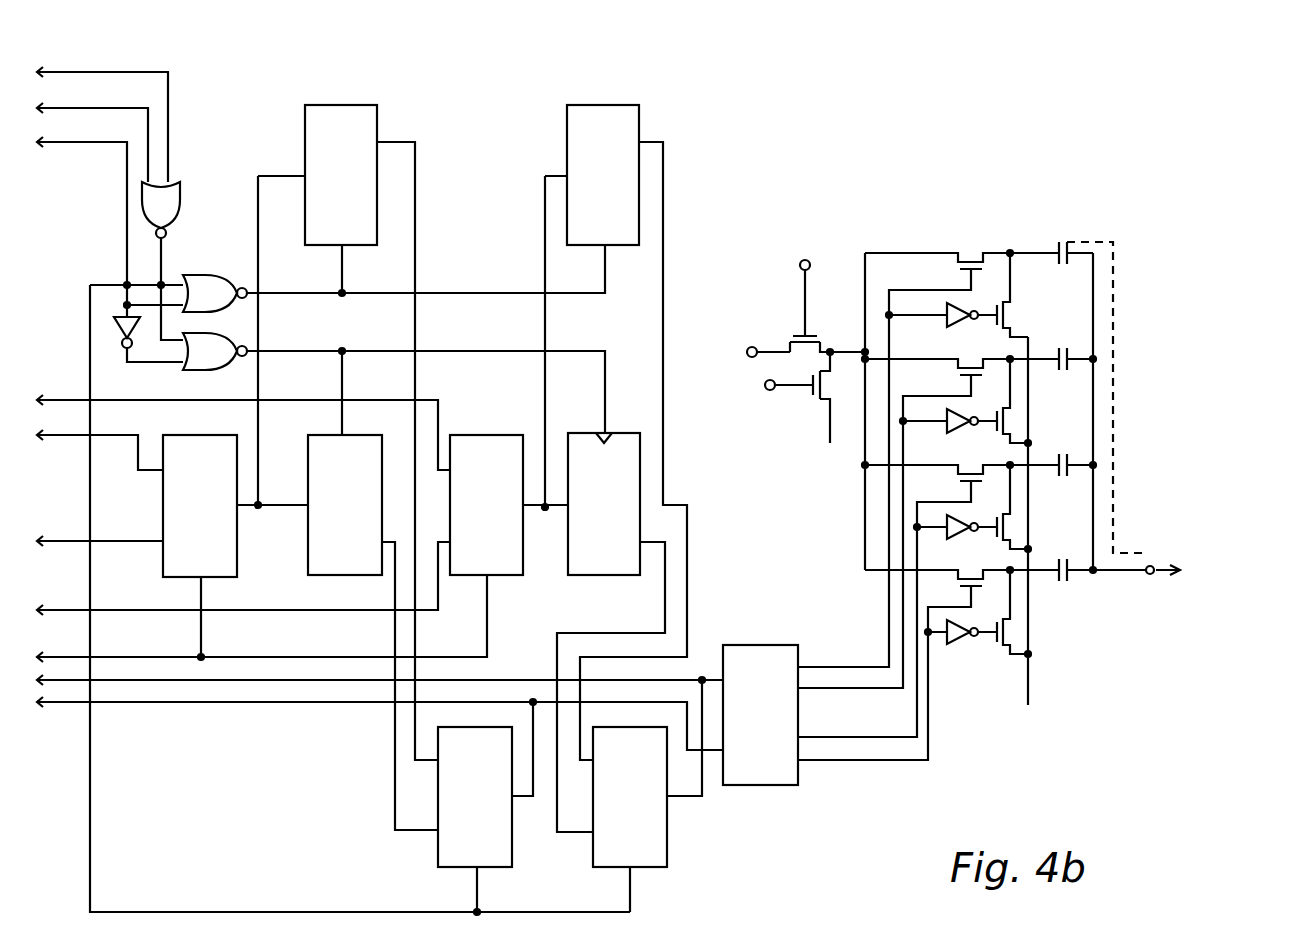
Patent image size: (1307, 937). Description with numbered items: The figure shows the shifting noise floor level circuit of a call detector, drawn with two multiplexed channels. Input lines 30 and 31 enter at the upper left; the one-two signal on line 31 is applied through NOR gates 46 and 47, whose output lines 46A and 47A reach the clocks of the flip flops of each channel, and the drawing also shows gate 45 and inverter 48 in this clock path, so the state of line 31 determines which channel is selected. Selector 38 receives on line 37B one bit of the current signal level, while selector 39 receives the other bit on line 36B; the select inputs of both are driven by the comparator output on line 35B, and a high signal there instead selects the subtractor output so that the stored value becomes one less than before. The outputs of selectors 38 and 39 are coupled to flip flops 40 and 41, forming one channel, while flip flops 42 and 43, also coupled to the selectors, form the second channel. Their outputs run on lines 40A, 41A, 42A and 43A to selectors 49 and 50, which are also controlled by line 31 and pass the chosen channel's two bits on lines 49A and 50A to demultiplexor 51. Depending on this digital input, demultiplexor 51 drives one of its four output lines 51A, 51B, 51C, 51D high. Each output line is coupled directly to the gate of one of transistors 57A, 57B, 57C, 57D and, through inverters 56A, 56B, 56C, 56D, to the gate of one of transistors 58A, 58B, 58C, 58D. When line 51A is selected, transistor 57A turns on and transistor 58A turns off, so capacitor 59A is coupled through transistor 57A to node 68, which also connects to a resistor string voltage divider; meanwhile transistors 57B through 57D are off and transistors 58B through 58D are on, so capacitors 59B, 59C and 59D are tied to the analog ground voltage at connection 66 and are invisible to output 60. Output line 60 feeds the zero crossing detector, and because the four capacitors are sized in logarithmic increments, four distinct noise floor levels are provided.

The input line 30 is at (118, 72).
The line 31 is at (68, 142).
The line 35B is at (60, 657).
The line 36B is at (52, 400).
The line 37B is at (66, 435).
The selector 38 is at (200, 506).
The selector 39 is at (486, 505).
The flip flop 40 is at (345, 505).
The output line of flip-flop 40 40A is at (395, 793).
The flip flop 41 is at (604, 504).
The output line of flip-flop 41 41A is at (660, 633).
The flip flop 42 is at (341, 175).
The output line of flip-flop 42 42A is at (415, 192).
The flip flop 43 is at (603, 175).
The output line of flip-flop 43 43A is at (665, 202).
The NOR gate 45 is at (175, 202).
The NOR gate 46 is at (207, 276).
The output line of NOR gate 46 46A is at (478, 293).
The NOR gate 47 is at (212, 340).
The output line of NOR gate 47 47A is at (497, 340).
The inverter 48 is at (123, 334).
The selector 49 is at (475, 798).
The signal line 49A is at (64, 702).
The selector 50 is at (630, 798).
The signal line 50A is at (134, 680).
The demultiplexor 51 is at (760, 715).
The output line 51A is at (889, 620).
The decoder output line 51B is at (856, 688).
The decoder output line 51C is at (917, 708).
The decoder output line 51D is at (928, 742).
The inverter 56A is at (948, 327).
The inverter 56B is at (950, 433).
The inverter 56C is at (955, 539).
The inverter 56D is at (955, 644).
The transistor 57A is at (965, 253).
The transistor 57B is at (978, 357).
The transistor 57C is at (980, 464).
The transistor 57D is at (985, 569).
The transistor 58A is at (1010, 311).
The transistor 58B is at (1012, 421).
The transistor 58C is at (1012, 527).
The transistor 58D is at (1020, 641).
The capacitor 59A is at (1060, 242).
The capacitor 59B is at (1060, 348).
The capacitor 59C is at (1063, 456).
The capacitor 59D is at (1065, 560).
The output line 60 is at (1160, 566).
The analog ground VAG node 66 is at (830, 443).
The node 68 is at (751, 347).